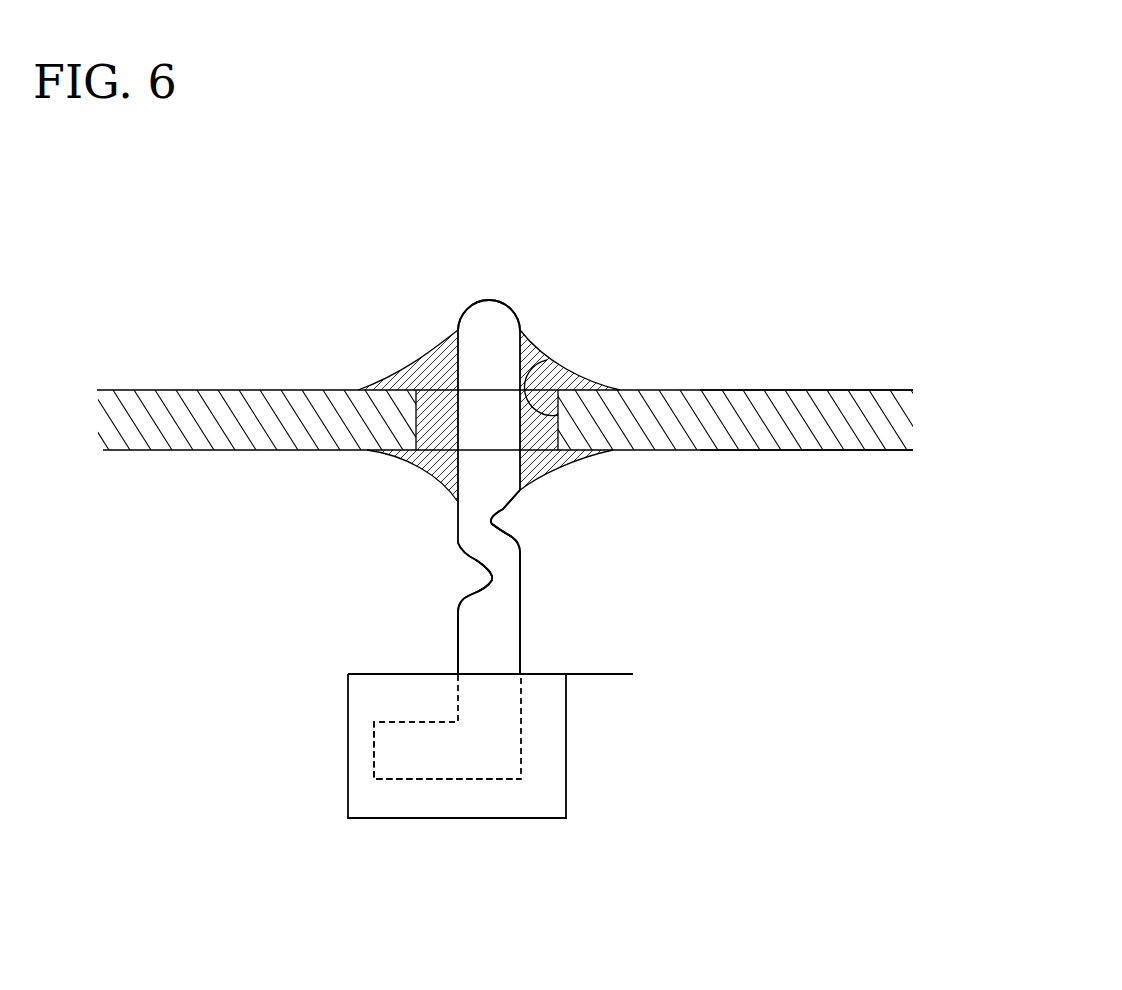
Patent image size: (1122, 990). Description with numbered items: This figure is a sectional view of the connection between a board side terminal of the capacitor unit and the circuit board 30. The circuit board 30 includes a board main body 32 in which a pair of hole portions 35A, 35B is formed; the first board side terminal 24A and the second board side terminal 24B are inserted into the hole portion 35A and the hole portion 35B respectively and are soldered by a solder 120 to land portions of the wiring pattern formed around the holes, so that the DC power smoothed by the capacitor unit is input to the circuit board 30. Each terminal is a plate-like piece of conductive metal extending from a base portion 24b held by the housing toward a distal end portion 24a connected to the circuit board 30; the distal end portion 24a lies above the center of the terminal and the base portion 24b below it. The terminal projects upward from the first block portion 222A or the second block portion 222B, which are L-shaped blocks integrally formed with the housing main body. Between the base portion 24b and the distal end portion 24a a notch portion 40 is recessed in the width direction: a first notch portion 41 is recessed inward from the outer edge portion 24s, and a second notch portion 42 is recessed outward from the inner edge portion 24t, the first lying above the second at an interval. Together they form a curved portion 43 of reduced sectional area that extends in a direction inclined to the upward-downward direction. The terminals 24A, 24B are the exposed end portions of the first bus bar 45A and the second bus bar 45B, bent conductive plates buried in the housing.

The circuit board 30 is at (187, 390).
The board main body 32 is at (776, 398).
The solder 120 is at (400, 370).
The hole portion 35A is at (634, 339).
The hole portion 35B is at (548, 357).
The first board side terminal 24A is at (459, 450).
The second board side terminal 24B is at (513, 310).
The distal end portion 24a is at (472, 307).
The base portion 24b is at (521, 667).
The inner edge portion 24t is at (521, 580).
The outer edge portion 24s is at (458, 645).
The notch portion 40 is at (490, 522).
The first notch portion 41 is at (467, 593).
The second notch portion 42 is at (615, 517).
The curved portion 43 is at (480, 550).
The first block portion 222A is at (583, 746).
The second block portion 222B is at (566, 785).
The first bus bar 45A is at (447, 833).
The second bus bar 45B is at (493, 779).